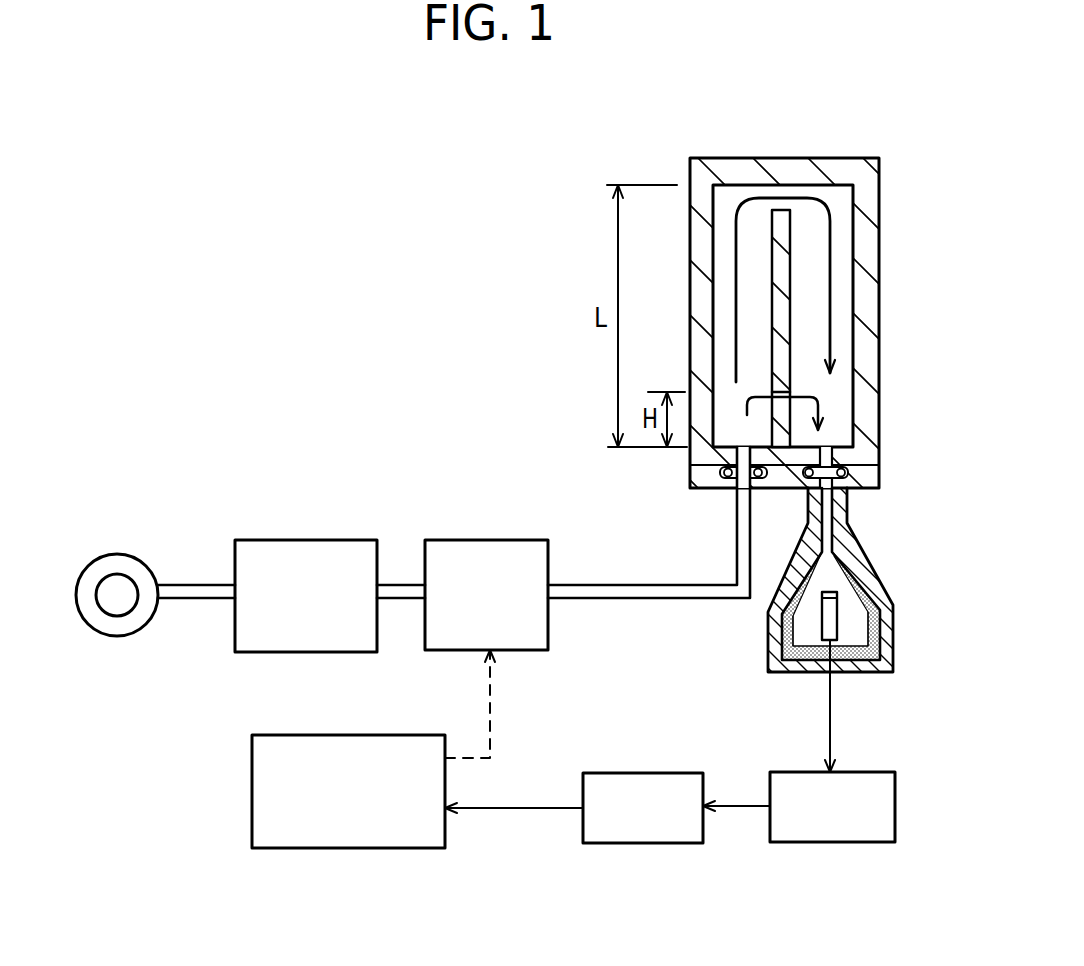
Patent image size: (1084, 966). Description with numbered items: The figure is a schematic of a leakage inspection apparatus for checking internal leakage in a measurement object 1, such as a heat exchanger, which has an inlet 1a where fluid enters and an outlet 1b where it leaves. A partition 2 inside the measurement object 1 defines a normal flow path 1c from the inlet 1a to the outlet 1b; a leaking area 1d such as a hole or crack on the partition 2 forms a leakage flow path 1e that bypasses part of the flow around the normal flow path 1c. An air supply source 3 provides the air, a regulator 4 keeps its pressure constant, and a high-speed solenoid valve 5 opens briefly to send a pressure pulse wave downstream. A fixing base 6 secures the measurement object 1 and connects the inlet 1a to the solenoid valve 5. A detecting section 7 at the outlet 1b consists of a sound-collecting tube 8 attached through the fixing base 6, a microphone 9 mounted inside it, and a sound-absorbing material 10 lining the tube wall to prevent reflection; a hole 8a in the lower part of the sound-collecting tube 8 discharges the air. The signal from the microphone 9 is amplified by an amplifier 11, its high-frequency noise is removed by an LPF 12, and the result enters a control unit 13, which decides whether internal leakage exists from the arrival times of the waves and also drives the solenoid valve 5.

The measurement object 1 is at (882, 192).
The inlet 1a is at (737, 499).
The outlet 1b is at (828, 447).
The normal flow path 1c is at (832, 283).
The leaking area 1d is at (791, 392).
The leakage flow path 1e is at (821, 401).
The partition 2 is at (776, 230).
The air supply source 3 is at (115, 637).
The regulator 4 is at (313, 540).
The solenoid valve 5 is at (470, 540).
The fixing base 6 is at (700, 472).
The detecting section 7 is at (888, 587).
The sound-collecting tube 8 is at (872, 673).
The hole 8a is at (775, 634).
The microphone 9 is at (822, 624).
The sound-absorbing material 10 is at (863, 563).
The amplifier 11 is at (843, 843).
The LPF 12 is at (652, 843).
The control unit 13 is at (355, 848).